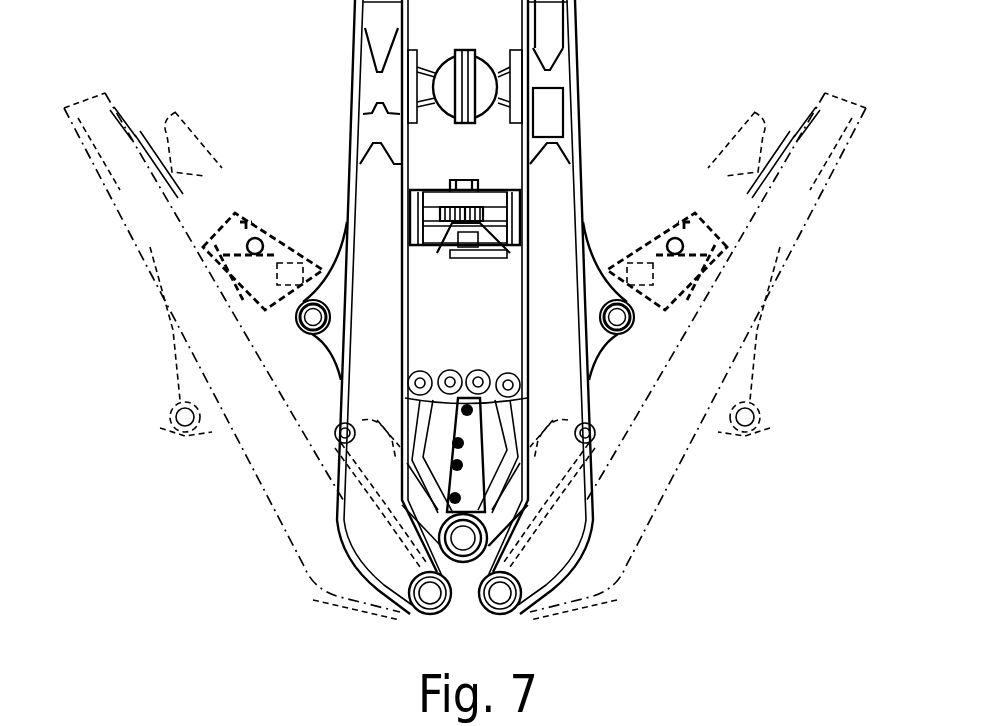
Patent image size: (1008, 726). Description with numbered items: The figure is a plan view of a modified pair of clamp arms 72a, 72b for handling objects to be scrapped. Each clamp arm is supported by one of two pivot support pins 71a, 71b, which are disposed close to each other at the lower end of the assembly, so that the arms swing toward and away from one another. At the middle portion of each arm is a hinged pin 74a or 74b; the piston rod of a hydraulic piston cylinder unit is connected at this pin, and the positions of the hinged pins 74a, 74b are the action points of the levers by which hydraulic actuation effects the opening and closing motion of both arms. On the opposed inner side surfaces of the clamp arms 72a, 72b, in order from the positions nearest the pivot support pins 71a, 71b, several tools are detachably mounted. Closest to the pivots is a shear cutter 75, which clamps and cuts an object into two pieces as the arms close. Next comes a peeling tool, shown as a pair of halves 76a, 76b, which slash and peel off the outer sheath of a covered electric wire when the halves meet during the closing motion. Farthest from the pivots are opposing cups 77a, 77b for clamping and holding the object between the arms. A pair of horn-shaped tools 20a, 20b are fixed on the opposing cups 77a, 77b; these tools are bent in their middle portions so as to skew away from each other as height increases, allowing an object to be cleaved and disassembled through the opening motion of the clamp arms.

The horn-shaped tool 20a is at (380, 121).
The horn-shaped tool 20b is at (553, 113).
The pivot support pin 71a is at (430, 592).
The pivot support pin 71b is at (500, 592).
The clamp arm 72a is at (383, 281).
The clamp arm 72b is at (553, 293).
The hinged pin 74a is at (300, 323).
The hinged pin 74b is at (637, 322).
The shear cutter 75 is at (493, 455).
The peeling tool half 76a is at (432, 210).
The peeling tool half 76b is at (487, 215).
The opposing cup 77a is at (433, 83).
The opposing cup 77b is at (485, 87).